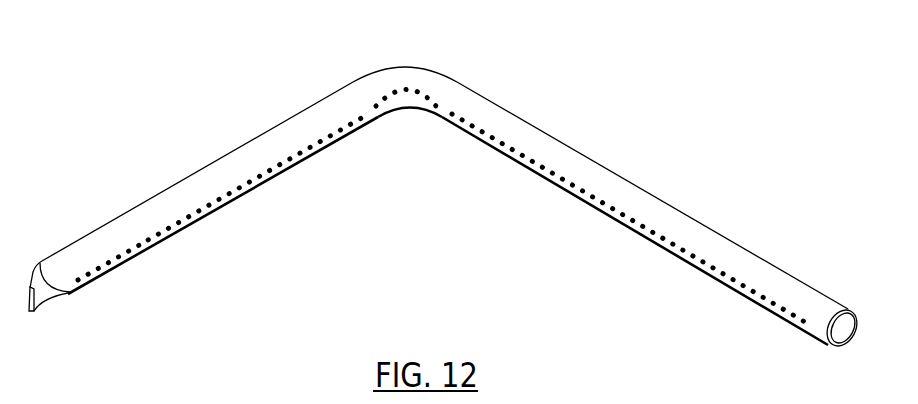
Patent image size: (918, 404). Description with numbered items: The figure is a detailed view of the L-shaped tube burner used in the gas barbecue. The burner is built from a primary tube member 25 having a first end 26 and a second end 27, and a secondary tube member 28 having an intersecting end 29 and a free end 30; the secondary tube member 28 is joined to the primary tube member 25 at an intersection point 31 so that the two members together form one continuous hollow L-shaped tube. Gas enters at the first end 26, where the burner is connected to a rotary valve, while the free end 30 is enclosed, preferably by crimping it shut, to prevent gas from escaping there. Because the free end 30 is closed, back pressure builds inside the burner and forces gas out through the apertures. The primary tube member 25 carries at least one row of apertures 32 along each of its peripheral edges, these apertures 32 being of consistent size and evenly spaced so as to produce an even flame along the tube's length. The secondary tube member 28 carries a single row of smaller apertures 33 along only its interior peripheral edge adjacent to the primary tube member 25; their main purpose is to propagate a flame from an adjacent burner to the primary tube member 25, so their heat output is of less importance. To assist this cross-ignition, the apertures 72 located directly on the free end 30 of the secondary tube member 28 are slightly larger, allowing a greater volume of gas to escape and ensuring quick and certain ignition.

The primary tube member 25 is at (645, 192).
The first end 26 is at (841, 334).
The second end 27 is at (452, 86).
The secondary tube member 28 is at (178, 186).
The intersecting end 29 is at (355, 92).
The free end 30 is at (60, 295).
The intersection point 31 is at (407, 77).
The apertures 32 is at (630, 222).
The apertures 33 is at (247, 187).
The apertures 72 is at (143, 246).